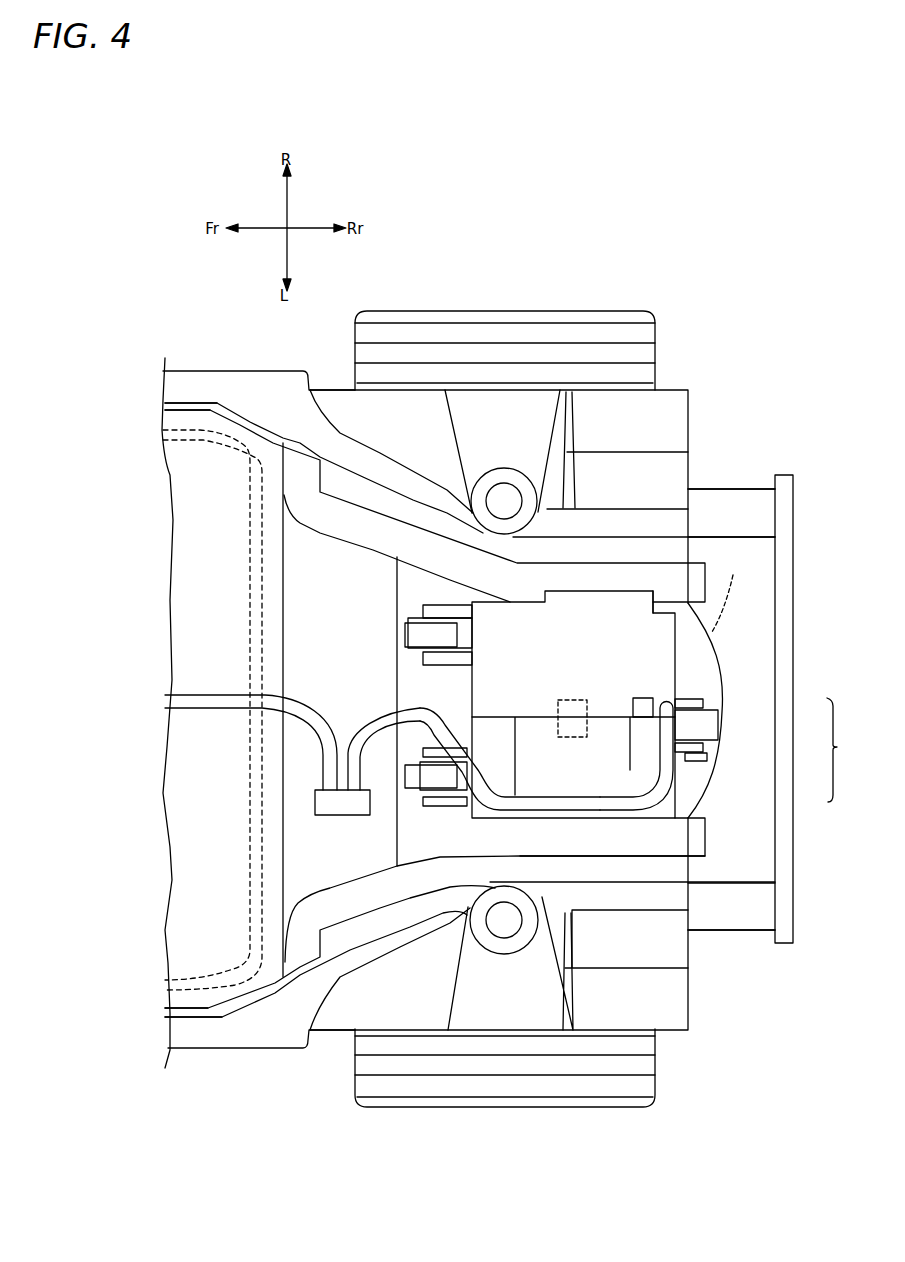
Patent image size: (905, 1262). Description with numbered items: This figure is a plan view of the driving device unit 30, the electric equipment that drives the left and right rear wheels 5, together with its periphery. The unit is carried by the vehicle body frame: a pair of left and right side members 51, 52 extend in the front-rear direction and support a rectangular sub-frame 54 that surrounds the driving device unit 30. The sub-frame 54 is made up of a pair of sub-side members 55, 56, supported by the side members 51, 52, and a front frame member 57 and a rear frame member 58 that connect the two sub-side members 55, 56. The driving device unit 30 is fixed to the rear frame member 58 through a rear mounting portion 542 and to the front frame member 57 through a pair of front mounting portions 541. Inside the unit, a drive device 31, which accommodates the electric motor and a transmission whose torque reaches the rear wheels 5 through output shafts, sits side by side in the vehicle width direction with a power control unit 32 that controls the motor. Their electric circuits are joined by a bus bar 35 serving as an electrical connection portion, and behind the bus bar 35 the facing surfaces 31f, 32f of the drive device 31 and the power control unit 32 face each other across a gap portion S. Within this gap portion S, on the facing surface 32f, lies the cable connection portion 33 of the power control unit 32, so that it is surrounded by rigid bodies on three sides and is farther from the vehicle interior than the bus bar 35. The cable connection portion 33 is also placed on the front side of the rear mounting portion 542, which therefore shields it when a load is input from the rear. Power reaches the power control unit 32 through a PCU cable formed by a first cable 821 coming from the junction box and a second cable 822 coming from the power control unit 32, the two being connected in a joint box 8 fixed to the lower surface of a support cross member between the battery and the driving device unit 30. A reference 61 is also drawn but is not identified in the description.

The rear wheels 5 is at (655, 353).
The side member 51 is at (238, 369).
The side member 52 is at (197, 1050).
The sub-frame 54 is at (720, 649).
The front mounting portions 541 is at (412, 636).
The rear mounting portion 542 is at (720, 737).
The sub-side member 55 is at (630, 560).
The sub-side member 56 is at (667, 860).
The front frame member 57 is at (387, 848).
The rear frame member 58 is at (730, 600).
The cable connection portion 33 is at (657, 703).
The bus bar 35 is at (560, 703).
The driving device unit 30 is at (847, 750).
The drive device 31 is at (680, 778).
The facing surface 31f is at (703, 760).
The power control unit (PCU) 32 is at (683, 670).
The facing surface 32f is at (705, 720).
The joint box 8 is at (340, 816).
The first cable 821 is at (200, 710).
The second cable 822 is at (677, 797).
The cover 61 is at (231, 1005).
The gap portion S is at (634, 736).